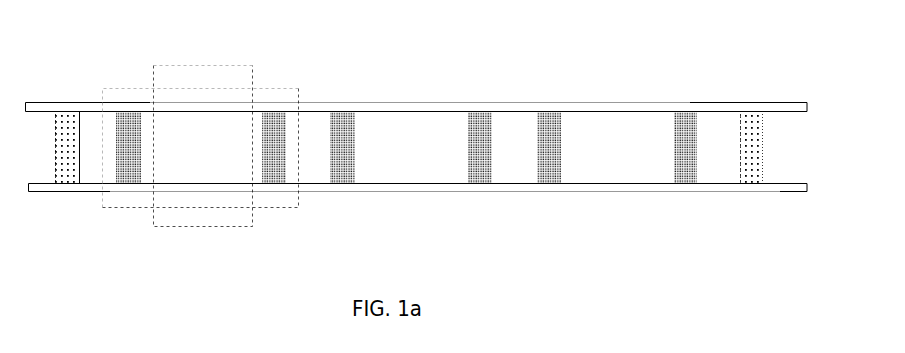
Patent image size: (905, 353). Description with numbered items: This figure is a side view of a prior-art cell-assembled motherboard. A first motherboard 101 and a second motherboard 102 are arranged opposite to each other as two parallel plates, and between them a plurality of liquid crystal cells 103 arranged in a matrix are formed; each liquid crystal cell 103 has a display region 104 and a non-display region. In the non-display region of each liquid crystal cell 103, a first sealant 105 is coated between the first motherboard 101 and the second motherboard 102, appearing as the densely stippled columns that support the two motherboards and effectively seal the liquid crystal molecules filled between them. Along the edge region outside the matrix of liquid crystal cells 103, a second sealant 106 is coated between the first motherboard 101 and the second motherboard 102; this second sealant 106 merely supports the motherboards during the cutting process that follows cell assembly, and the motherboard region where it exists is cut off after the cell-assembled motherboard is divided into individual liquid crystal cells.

The first motherboard 101 is at (700, 102).
The second motherboard 102 is at (620, 192).
The liquid crystal cell 103 is at (275, 87).
The display region 104 is at (203, 65).
The first sealant 105 is at (275, 165).
The second sealant 106 is at (760, 163).